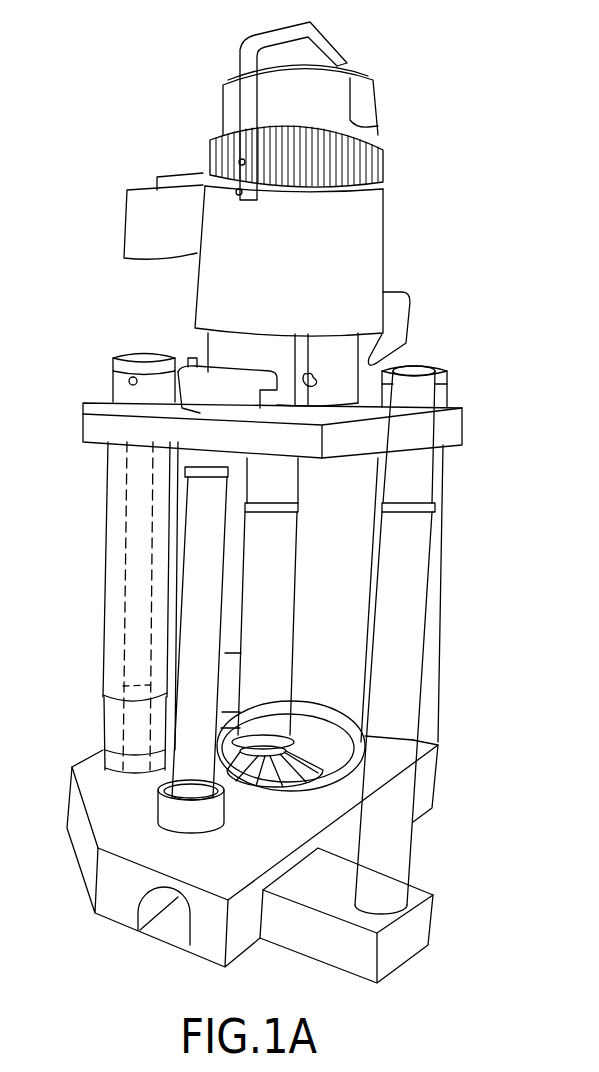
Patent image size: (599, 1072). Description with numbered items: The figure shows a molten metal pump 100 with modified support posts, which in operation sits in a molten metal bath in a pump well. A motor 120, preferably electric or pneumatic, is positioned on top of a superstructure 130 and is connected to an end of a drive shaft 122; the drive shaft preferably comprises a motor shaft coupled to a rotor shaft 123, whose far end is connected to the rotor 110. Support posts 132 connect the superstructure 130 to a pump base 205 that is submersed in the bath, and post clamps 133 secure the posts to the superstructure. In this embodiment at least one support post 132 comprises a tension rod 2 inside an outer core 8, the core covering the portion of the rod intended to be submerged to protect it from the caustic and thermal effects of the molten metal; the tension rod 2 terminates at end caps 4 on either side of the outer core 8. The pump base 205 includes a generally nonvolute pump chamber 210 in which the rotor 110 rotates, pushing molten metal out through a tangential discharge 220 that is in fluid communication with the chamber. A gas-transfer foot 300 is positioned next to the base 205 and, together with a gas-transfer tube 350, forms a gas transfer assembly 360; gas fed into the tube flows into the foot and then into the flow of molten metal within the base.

The molten metal pump 100 is at (492, 85).
The motor 120 is at (378, 235).
The post clamps 133 is at (112, 377).
The end caps 4 is at (112, 358).
The superstructure 130 is at (453, 428).
The rotor shaft 123 is at (298, 490).
The drive shaft 122 is at (297, 603).
The pump chamber 210 is at (307, 740).
The rotor 110 is at (307, 765).
The outer core 8 is at (108, 478).
The support posts 132 is at (108, 508).
The tension rod 2 is at (135, 686).
The gas-transfer tube 350 is at (436, 523).
The pump base 205 is at (432, 775).
The tangential discharge 220 is at (173, 920).
The gas-transfer foot 300 is at (412, 943).
The gas transfer assembly 360 is at (490, 848).